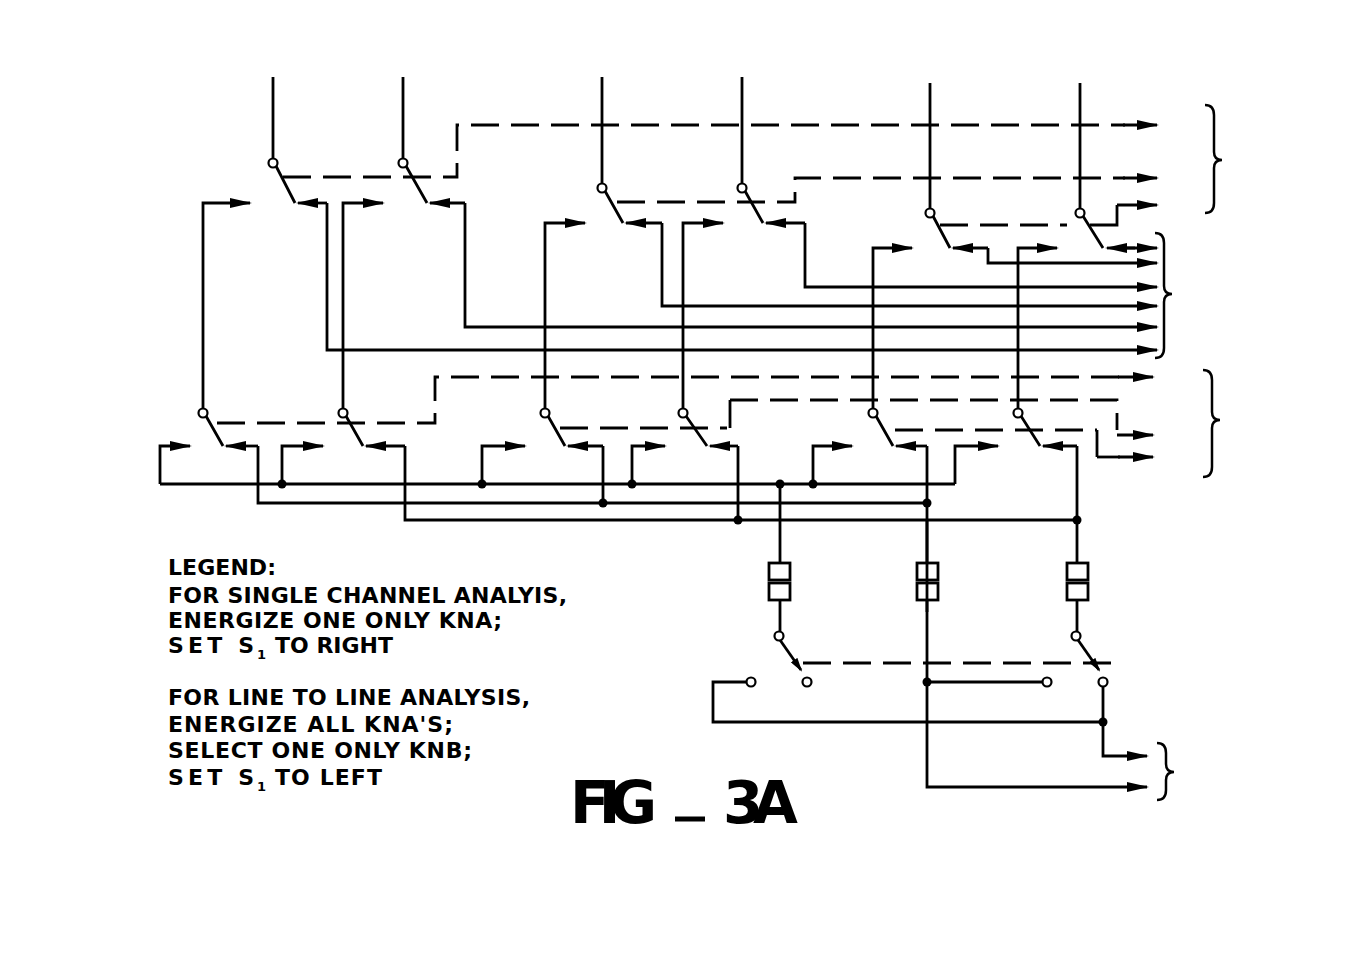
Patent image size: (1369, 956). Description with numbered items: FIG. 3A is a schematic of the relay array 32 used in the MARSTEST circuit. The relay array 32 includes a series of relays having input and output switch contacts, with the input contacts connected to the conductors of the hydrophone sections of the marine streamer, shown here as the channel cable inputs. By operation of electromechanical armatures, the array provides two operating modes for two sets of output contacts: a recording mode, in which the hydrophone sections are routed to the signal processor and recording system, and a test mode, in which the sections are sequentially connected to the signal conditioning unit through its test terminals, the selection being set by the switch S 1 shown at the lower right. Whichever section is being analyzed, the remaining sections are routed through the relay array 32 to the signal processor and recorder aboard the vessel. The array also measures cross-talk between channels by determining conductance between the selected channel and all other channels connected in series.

The relay array 32 is at (1141, 110).
The switch S1 1 is at (1118, 663).